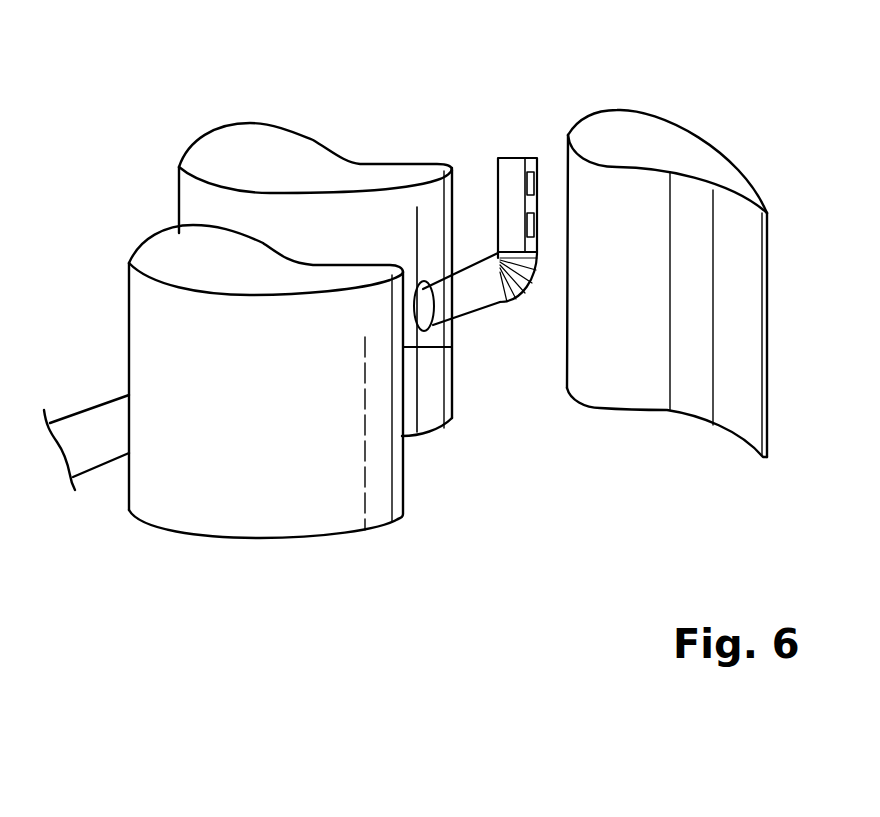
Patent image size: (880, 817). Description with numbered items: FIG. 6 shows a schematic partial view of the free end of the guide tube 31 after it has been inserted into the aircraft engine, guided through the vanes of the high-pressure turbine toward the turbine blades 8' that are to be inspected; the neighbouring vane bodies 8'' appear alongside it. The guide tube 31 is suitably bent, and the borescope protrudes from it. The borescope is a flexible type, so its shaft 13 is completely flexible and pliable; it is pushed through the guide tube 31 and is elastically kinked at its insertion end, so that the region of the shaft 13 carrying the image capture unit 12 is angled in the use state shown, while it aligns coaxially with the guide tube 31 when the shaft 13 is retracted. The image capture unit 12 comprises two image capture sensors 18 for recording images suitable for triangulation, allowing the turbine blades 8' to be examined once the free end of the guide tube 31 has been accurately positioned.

The shaft 8'' is at (248, 281).
The turbine blades 8' is at (667, 240).
The image capture unit 12 is at (527, 158).
The image capture sensors 18 is at (528, 227).
The shaft 13 is at (468, 300).
The guide tube 31 is at (413, 328).